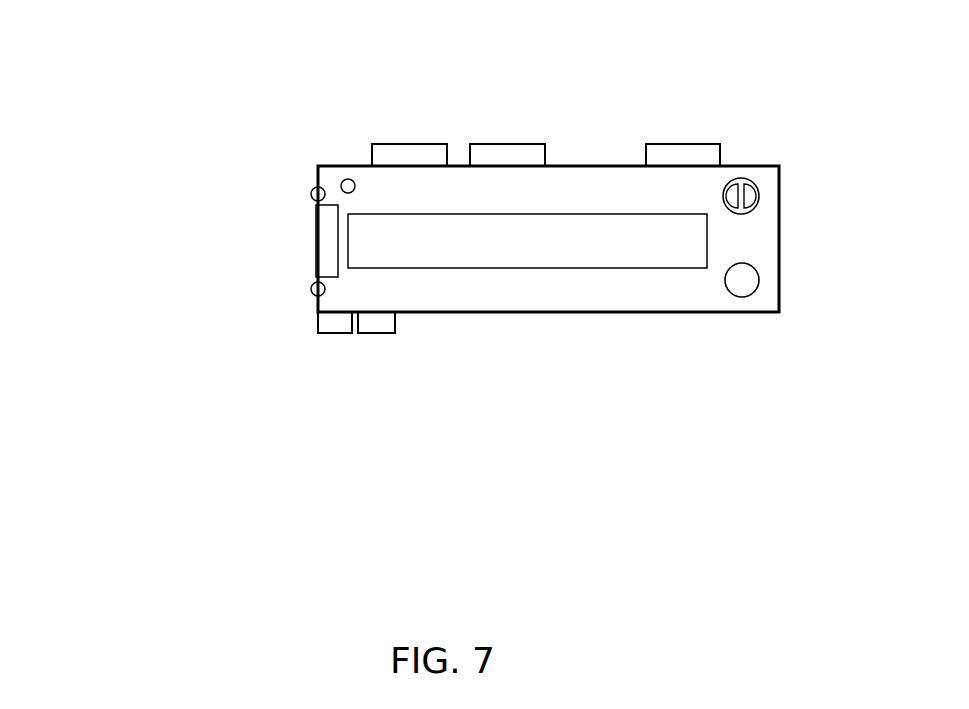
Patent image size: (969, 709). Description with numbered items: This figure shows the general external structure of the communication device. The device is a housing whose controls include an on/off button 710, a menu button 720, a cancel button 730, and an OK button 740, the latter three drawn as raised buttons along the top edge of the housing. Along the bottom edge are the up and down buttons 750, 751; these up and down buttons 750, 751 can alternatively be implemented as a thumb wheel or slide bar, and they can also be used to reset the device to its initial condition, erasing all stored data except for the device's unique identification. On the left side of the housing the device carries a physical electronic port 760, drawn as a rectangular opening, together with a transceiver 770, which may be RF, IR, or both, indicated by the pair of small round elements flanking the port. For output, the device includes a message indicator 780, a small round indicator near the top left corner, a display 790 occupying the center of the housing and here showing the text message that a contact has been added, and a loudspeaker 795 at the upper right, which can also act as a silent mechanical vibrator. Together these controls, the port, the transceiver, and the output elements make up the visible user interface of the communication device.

The on/off button 710 is at (745, 297).
The menu button 720 is at (683, 140).
The cancel button 730 is at (507, 142).
The OK button 740 is at (408, 142).
The up button 750 is at (325, 340).
The down button 751 is at (380, 338).
The physical electronic port 760 is at (313, 243).
The transceiver 770 is at (310, 290).
The message indicator 780 is at (347, 179).
The display 790 is at (552, 269).
The loudspeaker 795 is at (740, 178).